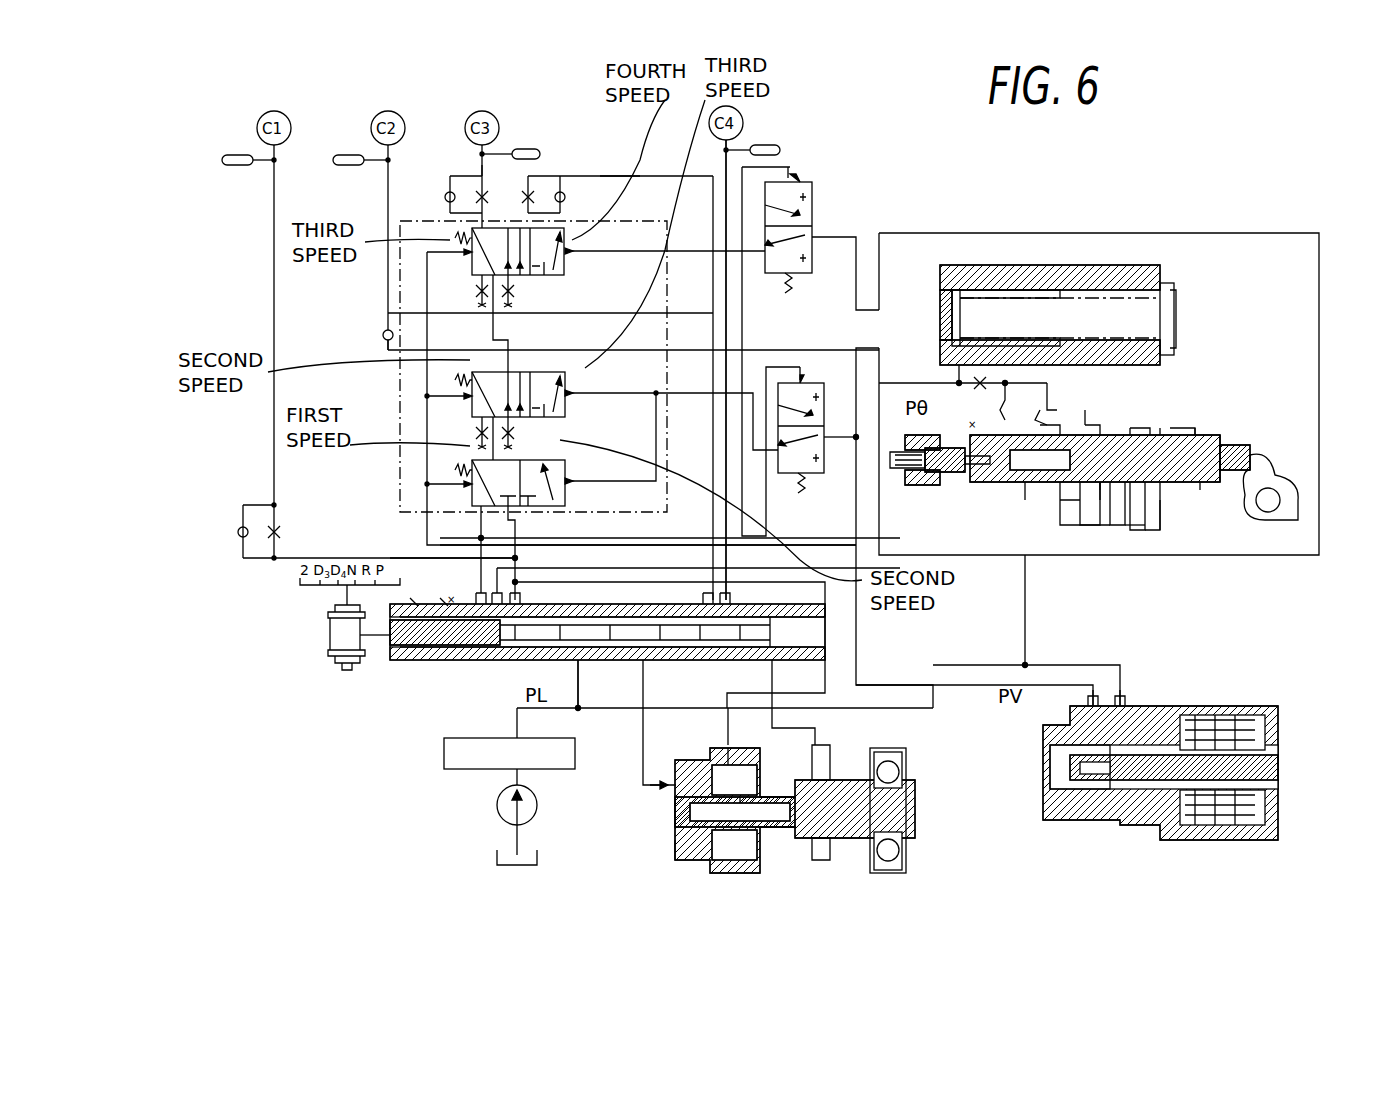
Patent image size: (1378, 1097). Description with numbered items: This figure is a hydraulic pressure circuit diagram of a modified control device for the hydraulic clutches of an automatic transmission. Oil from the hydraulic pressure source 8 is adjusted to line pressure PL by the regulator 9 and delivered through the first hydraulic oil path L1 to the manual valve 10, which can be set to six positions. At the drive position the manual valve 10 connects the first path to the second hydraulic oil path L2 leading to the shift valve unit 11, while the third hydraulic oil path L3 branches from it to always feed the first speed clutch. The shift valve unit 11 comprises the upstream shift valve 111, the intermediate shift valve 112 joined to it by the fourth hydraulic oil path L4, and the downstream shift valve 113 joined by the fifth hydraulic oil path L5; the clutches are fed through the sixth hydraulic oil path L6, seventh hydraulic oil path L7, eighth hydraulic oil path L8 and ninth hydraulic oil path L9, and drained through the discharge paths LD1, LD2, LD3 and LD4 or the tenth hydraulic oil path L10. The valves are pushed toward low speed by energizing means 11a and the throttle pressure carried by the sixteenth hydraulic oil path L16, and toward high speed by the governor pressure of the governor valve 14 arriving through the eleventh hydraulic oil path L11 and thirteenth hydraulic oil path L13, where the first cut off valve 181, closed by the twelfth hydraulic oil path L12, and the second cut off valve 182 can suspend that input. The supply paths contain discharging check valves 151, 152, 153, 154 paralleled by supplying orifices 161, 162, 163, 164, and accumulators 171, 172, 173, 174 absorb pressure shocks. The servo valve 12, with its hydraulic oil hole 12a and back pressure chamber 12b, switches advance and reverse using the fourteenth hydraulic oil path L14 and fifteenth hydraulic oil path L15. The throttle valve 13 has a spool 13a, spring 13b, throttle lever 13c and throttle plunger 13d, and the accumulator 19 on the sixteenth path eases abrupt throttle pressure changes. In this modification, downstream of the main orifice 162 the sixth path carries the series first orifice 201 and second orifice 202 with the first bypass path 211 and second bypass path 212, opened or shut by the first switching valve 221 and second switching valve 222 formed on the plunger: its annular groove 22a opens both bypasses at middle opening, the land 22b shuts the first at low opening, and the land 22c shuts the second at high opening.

The hydraulic pressure source 8 is at (495, 805).
The regulator 9 is at (470, 736).
The manual valve 10 is at (680, 658).
The shift valve unit 11 is at (668, 300).
The energizing means 11a is at (455, 470).
The 1-2 shift valve 111 is at (567, 498).
The 2-3 intermediate shift valve 112 is at (567, 383).
The 3-4 shift valve 113 is at (566, 262).
The servo valve 12 is at (773, 795).
The hydraulic oil hole 12a is at (762, 812).
The back pressure chamber 12b is at (672, 850).
The throttle valve 13 is at (1098, 478).
The spool 13a is at (1045, 492).
The spring 13b is at (1088, 430).
The throttle lever 13c is at (1270, 485).
The throttle plunger 13d is at (1225, 440).
The governor valve 14 is at (1288, 742).
The hydraulic oil discharging check valve 151 is at (238, 532).
The hydraulic oil discharging check valve 152 is at (383, 335).
The hydraulic oil discharging check valve 153 is at (444, 196).
The hydraulic oil discharging check valve 154 is at (566, 197).
The hydraulic oil supplying orifice 161 is at (282, 533).
The main orifice 162 is at (1120, 555).
The hydraulic oil supplying orifice 163 is at (485, 193).
The hydraulic oil supplying orifice 164 is at (532, 190).
The accumulator 171 is at (240, 166).
The accumulator 172 is at (350, 166).
The accumulator 173 is at (528, 148).
The accumulator 174 is at (780, 150).
The first cut off valve 181 is at (815, 212).
The second cut off valve 182 is at (815, 478).
The accumulator 19 is at (1040, 264).
The first orifice 201 is at (1155, 550).
The second orifice 202 is at (1170, 545).
The first bypass path 211 is at (1125, 515).
The second bypass path 212 is at (1180, 535).
The first switching valve 221 is at (1125, 490).
The second switching valve 222 is at (1205, 490).
The annular groove 22a is at (1168, 425).
The land 22b is at (1137, 432).
The land 22c is at (1203, 432).
The first hydraulic oil path L1 is at (605, 712).
The second hydraulic oil path L2 is at (520, 518).
The third hydraulic oil path L3 is at (345, 556).
The fourth hydraulic oil path L4 is at (525, 455).
The fifth hydraulic oil path L5 is at (512, 342).
The sixth hydraulic oil path L6 is at (612, 350).
The seventh hydraulic oil path L7 is at (480, 170).
The eighth hydraulic oil path L8 is at (612, 172).
The ninth hydraulic oil path L9 is at (730, 528).
The tenth hydraulic oil path L10 is at (480, 580).
The eleventh hydraulic oil path L11 is at (690, 258).
The twelfth hydraulic oil path L12 is at (745, 332).
The thirteenth hydraulic oil path L13 is at (702, 400).
The fourteenth hydraulic oil path L14 is at (640, 755).
The fifteenth hydraulic oil path L15 is at (815, 730).
The sixteenth hydraulic oil path L16 is at (908, 380).
The first hydraulic oil discharge path LD1 is at (478, 437).
The second hydraulic oil discharge path LD2 is at (478, 295).
The hydraulic oil discharge path LD3 is at (514, 292).
The fourth hydraulic oil discharge path LD4 is at (514, 433).